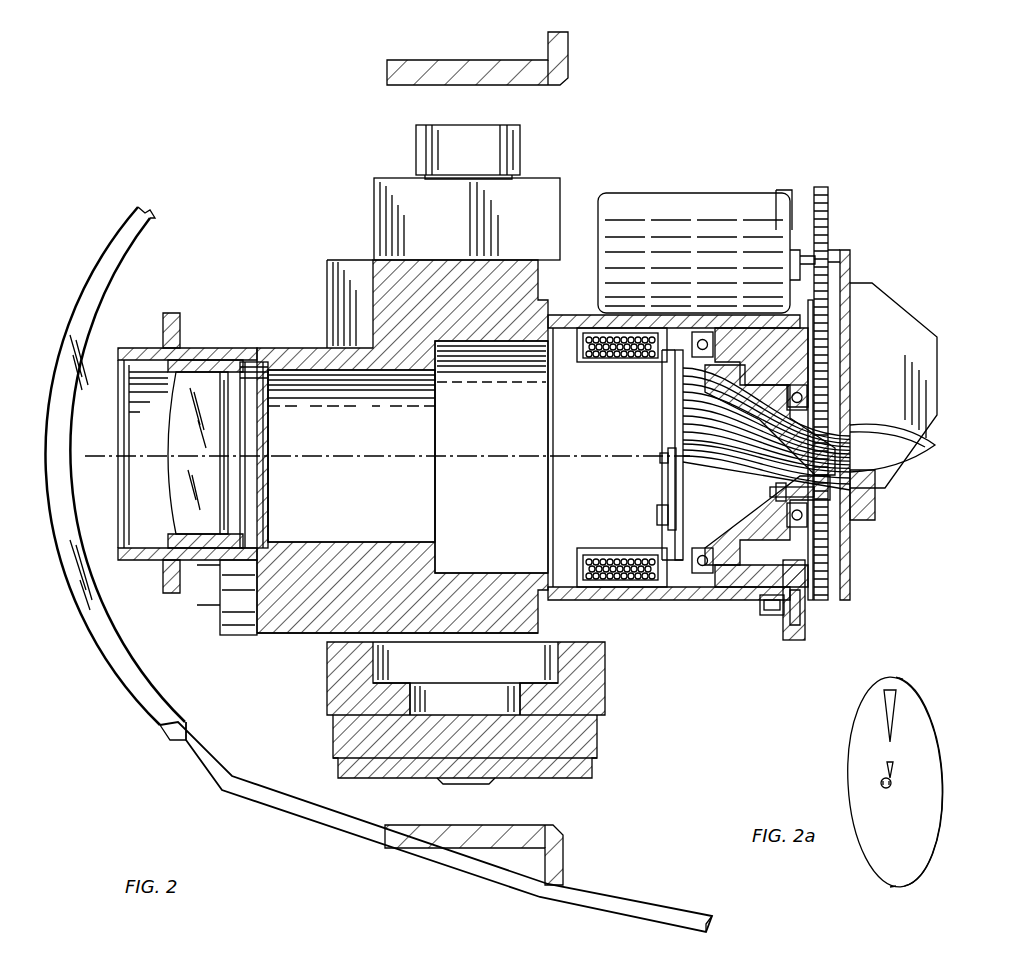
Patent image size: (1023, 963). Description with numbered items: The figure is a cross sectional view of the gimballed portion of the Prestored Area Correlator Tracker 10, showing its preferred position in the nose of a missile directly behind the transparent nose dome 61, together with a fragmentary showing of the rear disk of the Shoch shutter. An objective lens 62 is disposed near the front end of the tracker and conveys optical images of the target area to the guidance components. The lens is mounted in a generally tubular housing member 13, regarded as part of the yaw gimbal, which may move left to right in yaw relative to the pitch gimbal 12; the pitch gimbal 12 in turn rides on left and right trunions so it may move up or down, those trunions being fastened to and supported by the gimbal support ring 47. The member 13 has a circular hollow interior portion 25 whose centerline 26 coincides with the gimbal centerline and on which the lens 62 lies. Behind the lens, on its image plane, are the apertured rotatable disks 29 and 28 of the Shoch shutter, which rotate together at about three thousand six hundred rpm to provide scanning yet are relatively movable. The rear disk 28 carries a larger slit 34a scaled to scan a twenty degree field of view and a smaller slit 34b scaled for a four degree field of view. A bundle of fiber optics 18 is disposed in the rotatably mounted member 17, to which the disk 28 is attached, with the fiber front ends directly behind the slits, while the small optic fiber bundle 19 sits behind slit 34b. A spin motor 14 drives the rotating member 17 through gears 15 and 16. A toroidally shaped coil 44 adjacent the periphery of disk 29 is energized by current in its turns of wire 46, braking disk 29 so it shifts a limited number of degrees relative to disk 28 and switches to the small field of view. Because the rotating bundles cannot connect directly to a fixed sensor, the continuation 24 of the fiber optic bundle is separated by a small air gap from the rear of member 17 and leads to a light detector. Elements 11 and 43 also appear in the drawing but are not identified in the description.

In FIG. 2, the Prestored Area Correlator Tracker 10 is at (270, 655).
In FIG. 2, the mounting bracket 11 is at (445, 870).
In FIG. 2, the pitch gimbal 12 is at (562, 190).
In FIG. 2, the tubular housing member 13 is at (540, 285).
In FIG. 2, the spin motor 14 is at (700, 190).
In FIG. 2, the gear 15 is at (830, 210).
In FIG. 2, the gear 16 is at (820, 590).
In FIG. 2, the rotatably mounted member 17 is at (740, 560).
In FIG. 2, the fiber optic bundle 18 is at (683, 390).
In FIG. 2, the small optic fiber bundle 19 is at (690, 438).
In FIG. 2, the continuation of the fiber optic bundle 24 is at (893, 480).
In FIG. 2, the hollow interior portion 25 is at (316, 400).
In FIG. 2, the centerline 26 is at (404, 458).
In FIG. 2, the apertured rotatable disk 28 is at (668, 478).
In FIG. 2A, the apertured rotatable disk 28 is at (850, 752).
In FIG. 2, the apertured rotatable disk 29 is at (675, 415).
In FIG. 2A, the slit 34a is at (896, 703).
In FIG. 2A, the slit 34b is at (894, 769).
In FIG. 2, the adjusting knob 43 is at (522, 148).
In FIG. 2, the toroidally shaped coil 44 is at (580, 590).
In FIG. 2, the turns of wire 46 is at (640, 590).
In FIG. 2, the gimbal support ring 47 is at (562, 88).
In FIG. 2, the transparent nose dome 61 is at (112, 698).
In FIG. 2, the objective lens 62 is at (214, 360).